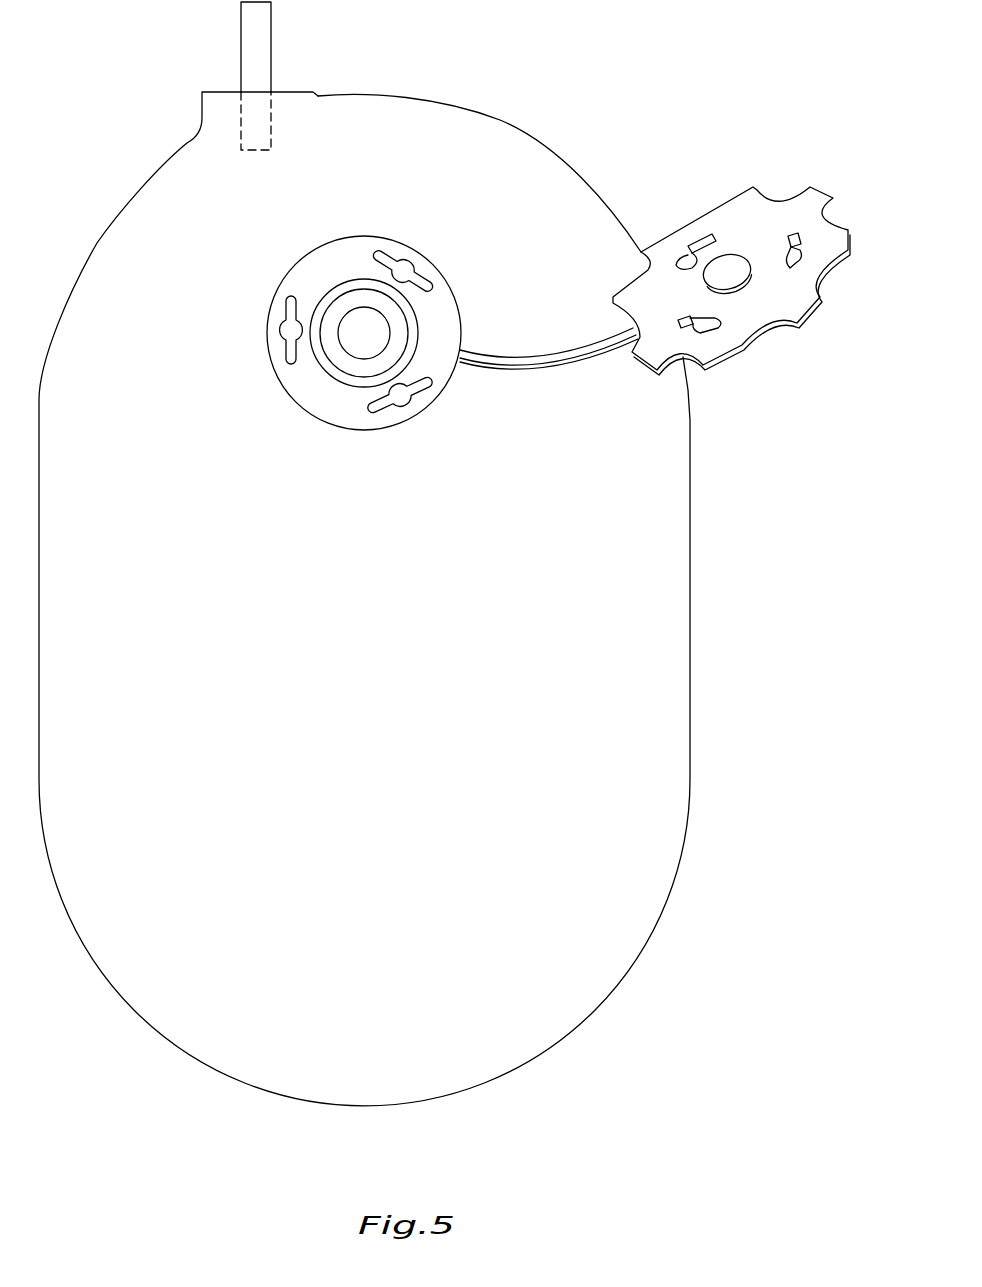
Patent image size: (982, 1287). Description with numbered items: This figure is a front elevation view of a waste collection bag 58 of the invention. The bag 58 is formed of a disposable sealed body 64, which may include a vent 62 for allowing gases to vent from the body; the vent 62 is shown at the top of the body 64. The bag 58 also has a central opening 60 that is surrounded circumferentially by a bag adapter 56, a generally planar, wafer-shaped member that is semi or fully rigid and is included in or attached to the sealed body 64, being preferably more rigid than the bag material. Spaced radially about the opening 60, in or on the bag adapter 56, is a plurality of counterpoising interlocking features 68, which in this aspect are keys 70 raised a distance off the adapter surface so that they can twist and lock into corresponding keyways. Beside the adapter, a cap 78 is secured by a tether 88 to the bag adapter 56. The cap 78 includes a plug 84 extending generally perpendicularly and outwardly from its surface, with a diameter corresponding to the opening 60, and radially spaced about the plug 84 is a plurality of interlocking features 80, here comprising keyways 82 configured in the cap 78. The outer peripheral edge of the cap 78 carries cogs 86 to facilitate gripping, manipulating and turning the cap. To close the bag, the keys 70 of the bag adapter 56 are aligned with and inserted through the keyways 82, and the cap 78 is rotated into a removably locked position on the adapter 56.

The bag adapter 56 is at (460, 295).
The waste collection bag 58 is at (505, 97).
The central opening 60 is at (358, 328).
The vent 62 is at (272, 48).
The sealed body 64 is at (668, 538).
The counterpoising interlocking features 68 is at (343, 329).
The keys 70 is at (382, 253).
The cap 78 is at (738, 186).
The interlocking features 80 is at (685, 226).
The keyways 82 is at (702, 240).
The plug 84 is at (713, 272).
The cogs 86 is at (762, 334).
The tether 88 is at (538, 355).